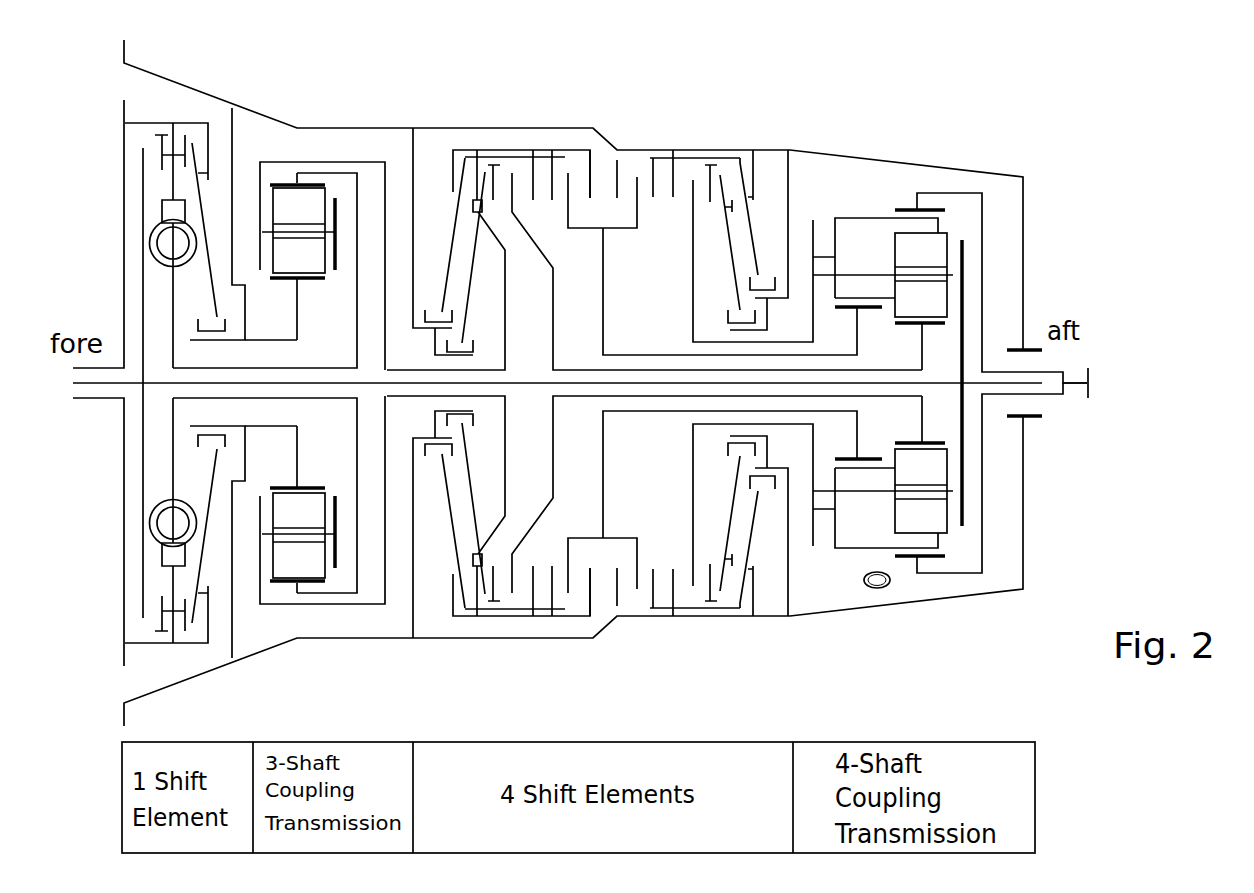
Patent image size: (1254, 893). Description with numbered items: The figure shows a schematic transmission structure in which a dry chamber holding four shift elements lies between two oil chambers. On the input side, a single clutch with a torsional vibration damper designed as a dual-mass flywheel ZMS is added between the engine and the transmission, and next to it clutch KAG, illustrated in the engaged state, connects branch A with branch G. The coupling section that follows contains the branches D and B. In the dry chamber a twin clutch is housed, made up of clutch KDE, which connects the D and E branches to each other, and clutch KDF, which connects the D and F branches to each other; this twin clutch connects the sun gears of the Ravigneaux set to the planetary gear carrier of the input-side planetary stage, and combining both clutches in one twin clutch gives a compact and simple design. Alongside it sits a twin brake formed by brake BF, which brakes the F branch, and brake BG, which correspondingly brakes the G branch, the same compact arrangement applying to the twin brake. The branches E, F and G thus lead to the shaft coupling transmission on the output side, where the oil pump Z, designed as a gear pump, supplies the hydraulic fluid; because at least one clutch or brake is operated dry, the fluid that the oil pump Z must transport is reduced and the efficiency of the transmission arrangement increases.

The clutch K connecting branch A with branch G KAG is at (156, 156).
The dual-mass flywheel ZMS is at (188, 225).
The D branch D is at (322, 367).
The A branch A is at (265, 383).
The brake B is at (290, 383).
The clutch connecting the D and E branches KDE is at (503, 183).
The clutch connecting the D and F branches KDF is at (565, 185).
The brake for the F branch BF is at (644, 182).
The brake for the G branch BG is at (700, 190).
The G branch G is at (883, 365).
The F branch F is at (858, 383).
The E branch E is at (921, 383).
The oil pump Z is at (1002, 382).